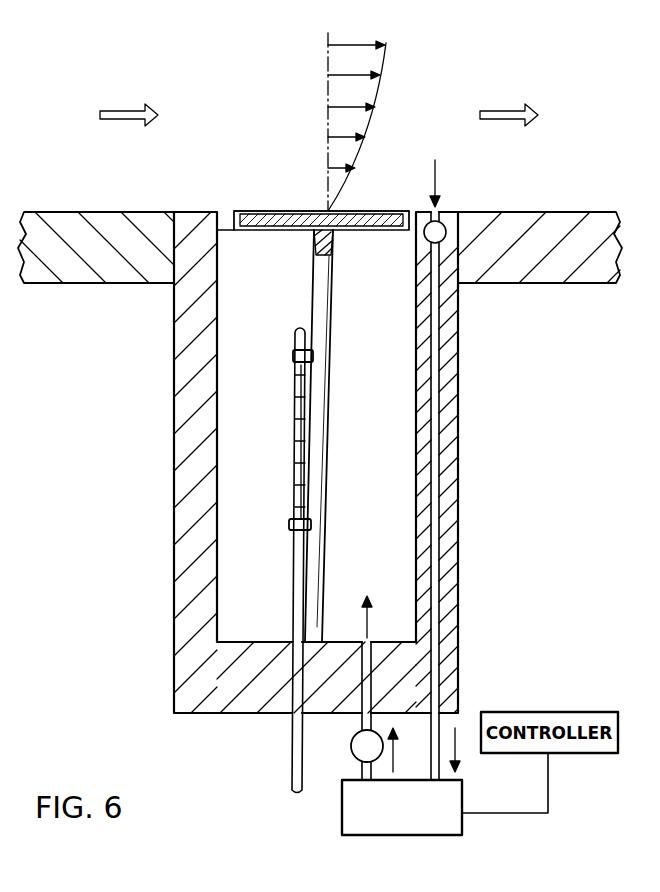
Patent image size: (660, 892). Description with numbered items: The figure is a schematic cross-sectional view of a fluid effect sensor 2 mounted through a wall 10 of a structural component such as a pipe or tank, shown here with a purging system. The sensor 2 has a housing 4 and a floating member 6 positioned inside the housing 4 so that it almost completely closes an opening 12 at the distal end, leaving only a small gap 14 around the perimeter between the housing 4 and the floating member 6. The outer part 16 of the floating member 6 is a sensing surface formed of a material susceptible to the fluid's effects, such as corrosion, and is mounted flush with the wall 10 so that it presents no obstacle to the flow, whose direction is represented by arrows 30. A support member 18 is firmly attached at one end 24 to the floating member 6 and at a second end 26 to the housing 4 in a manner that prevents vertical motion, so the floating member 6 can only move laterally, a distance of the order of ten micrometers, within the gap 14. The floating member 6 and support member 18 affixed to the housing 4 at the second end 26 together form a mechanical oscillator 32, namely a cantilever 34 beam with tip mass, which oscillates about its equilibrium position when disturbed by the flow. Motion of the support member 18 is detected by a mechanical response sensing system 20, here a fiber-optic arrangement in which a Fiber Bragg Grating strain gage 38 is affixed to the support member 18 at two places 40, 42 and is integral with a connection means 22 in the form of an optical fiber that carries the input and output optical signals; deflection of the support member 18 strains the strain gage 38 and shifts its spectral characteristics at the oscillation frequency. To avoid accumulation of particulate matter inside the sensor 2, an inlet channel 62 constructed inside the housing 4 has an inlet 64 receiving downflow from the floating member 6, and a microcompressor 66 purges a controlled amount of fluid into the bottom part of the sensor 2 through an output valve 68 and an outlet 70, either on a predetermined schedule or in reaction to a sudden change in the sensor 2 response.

The sensor 2 is at (124, 633).
The housing 4 is at (174, 454).
The floating member 6 is at (272, 231).
The wall 10 is at (97, 211).
The opening 12 is at (228, 232).
The gap 14 is at (224, 210).
The outer part 16 is at (284, 210).
The support member 18 is at (326, 429).
The mechanical response sensing system 20 is at (305, 485).
The connection means 22 is at (295, 772).
The one end 24 is at (334, 236).
The second end 26 is at (308, 632).
The arrows 30 is at (327, 88).
The mechanical oscillator 32 is at (239, 166).
The cantilever 34 is at (265, 208).
The Fiber Bragg Grating strain gage 38 is at (293, 429).
The place 40 is at (313, 356).
The place 42 is at (311, 524).
The inlet channel 62 is at (441, 380).
The inlet 64 is at (445, 220).
The microcompressor 66 is at (410, 818).
The output valve 68 is at (351, 746).
The outlet 70 is at (368, 640).